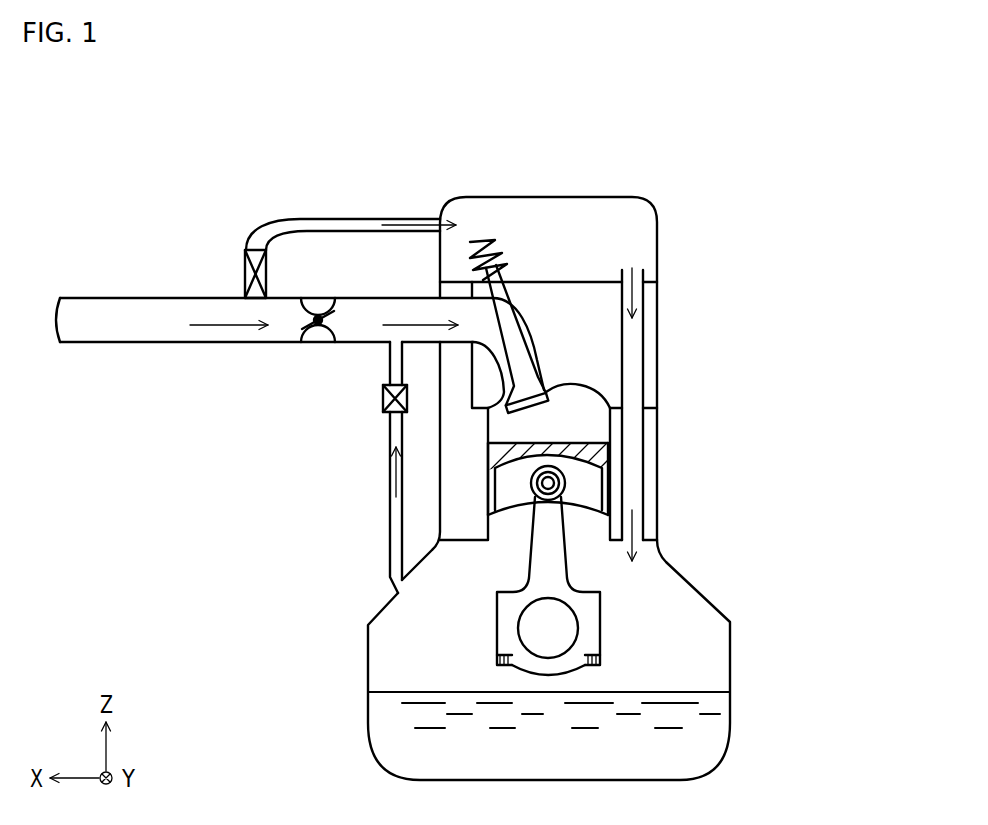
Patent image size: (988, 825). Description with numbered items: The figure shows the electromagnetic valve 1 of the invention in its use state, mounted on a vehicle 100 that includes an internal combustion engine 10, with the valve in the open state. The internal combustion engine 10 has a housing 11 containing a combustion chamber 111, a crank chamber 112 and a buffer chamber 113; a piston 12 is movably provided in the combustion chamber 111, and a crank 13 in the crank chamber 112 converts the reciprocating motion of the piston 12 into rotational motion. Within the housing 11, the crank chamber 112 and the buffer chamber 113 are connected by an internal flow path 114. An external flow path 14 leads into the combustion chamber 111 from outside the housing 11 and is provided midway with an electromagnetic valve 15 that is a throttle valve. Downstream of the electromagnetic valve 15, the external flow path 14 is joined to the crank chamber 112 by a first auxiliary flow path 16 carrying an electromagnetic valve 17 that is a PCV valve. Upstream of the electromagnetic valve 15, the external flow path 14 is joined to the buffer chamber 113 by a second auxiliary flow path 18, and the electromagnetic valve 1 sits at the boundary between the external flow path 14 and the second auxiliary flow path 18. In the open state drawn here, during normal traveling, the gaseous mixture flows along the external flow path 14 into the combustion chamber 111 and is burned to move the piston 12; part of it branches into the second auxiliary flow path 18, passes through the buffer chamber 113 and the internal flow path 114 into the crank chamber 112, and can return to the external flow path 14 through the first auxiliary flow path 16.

The vehicle 100 is at (821, 159).
The internal combustion engine 10 is at (751, 252).
The electromagnetic valve 1 is at (245, 247).
The external flow path 14 is at (125, 298).
The electromagnetic valve 15 is at (318, 341).
The first auxiliary flow path 16 is at (390, 525).
The electromagnetic valve 17 is at (383, 398).
The second auxiliary flow path 18 is at (363, 219).
The housing 11 is at (689, 570).
The piston 12 is at (619, 478).
The crank 13 is at (611, 608).
The combustion chamber 111 is at (586, 422).
The crank chamber 112 is at (693, 662).
The buffer chamber 113 is at (620, 228).
The internal flow path 114 is at (645, 340).